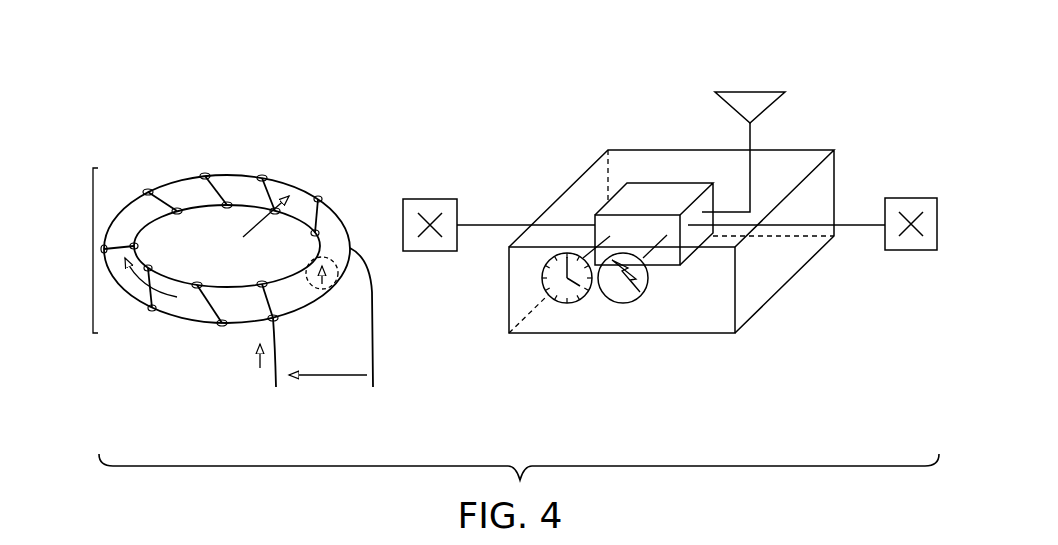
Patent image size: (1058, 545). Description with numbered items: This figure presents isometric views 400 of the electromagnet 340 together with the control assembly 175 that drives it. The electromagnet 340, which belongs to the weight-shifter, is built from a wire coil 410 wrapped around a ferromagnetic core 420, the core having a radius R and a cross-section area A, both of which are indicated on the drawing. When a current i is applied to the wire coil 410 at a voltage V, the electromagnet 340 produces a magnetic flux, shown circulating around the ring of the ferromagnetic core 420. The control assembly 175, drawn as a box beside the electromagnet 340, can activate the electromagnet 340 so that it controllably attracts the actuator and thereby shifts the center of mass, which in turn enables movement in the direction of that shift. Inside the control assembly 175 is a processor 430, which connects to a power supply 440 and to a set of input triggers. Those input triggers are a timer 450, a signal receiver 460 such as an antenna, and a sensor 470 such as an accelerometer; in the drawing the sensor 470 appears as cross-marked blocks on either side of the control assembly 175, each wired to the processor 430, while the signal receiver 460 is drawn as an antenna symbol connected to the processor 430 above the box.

The isometric views 400 is at (276, 96).
The wire coil 410 is at (148, 190).
The ferromagnetic core 420 is at (288, 182).
The electromagnet 340 is at (92, 250).
The control assembly 175 is at (447, 87).
The processor 430 is at (645, 182).
The power supply 440 is at (623, 302).
The timer 450 is at (560, 302).
The signal receiver 460 is at (770, 110).
The sensor 470 is at (427, 200).